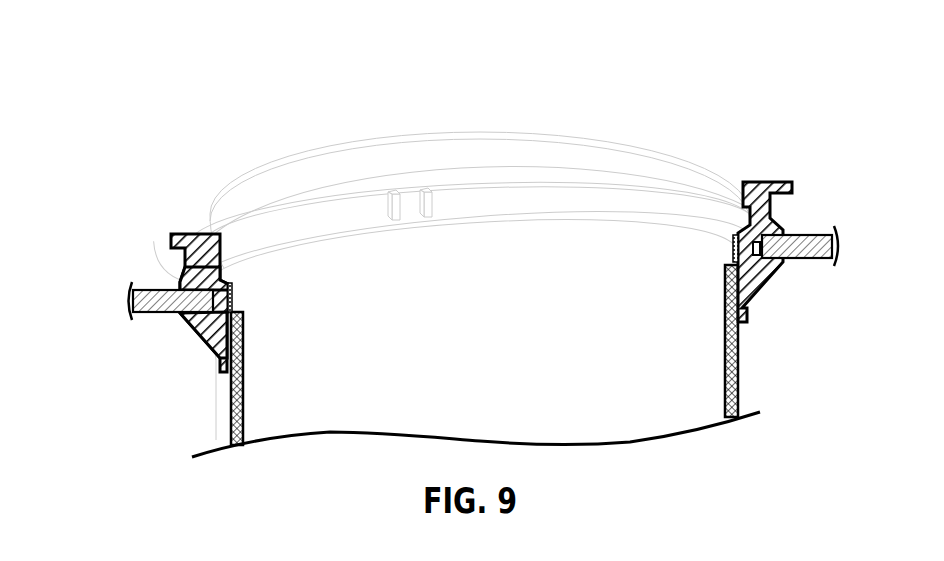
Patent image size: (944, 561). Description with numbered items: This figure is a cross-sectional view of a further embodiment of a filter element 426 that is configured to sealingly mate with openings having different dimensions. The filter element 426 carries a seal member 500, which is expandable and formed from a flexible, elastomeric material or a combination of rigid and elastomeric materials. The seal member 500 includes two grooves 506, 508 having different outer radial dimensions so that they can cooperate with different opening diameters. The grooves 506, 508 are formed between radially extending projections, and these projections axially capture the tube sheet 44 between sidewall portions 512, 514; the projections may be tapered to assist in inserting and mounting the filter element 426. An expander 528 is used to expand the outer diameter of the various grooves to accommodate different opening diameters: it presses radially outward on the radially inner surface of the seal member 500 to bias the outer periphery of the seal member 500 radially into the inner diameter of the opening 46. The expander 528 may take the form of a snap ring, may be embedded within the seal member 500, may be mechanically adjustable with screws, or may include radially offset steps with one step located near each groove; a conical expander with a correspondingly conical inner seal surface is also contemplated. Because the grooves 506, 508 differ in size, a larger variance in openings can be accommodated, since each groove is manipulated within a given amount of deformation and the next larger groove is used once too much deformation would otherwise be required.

The seal member 500 is at (224, 120).
The filter element 426 is at (683, 122).
The expander 528 is at (445, 200).
The groove 506 is at (136, 237).
The sidewall portion 512 is at (180, 283).
The tube sheet 44 is at (130, 301).
The sidewall portion 514 is at (180, 313).
The groove 508 is at (250, 297).
The opening 46 is at (735, 253).